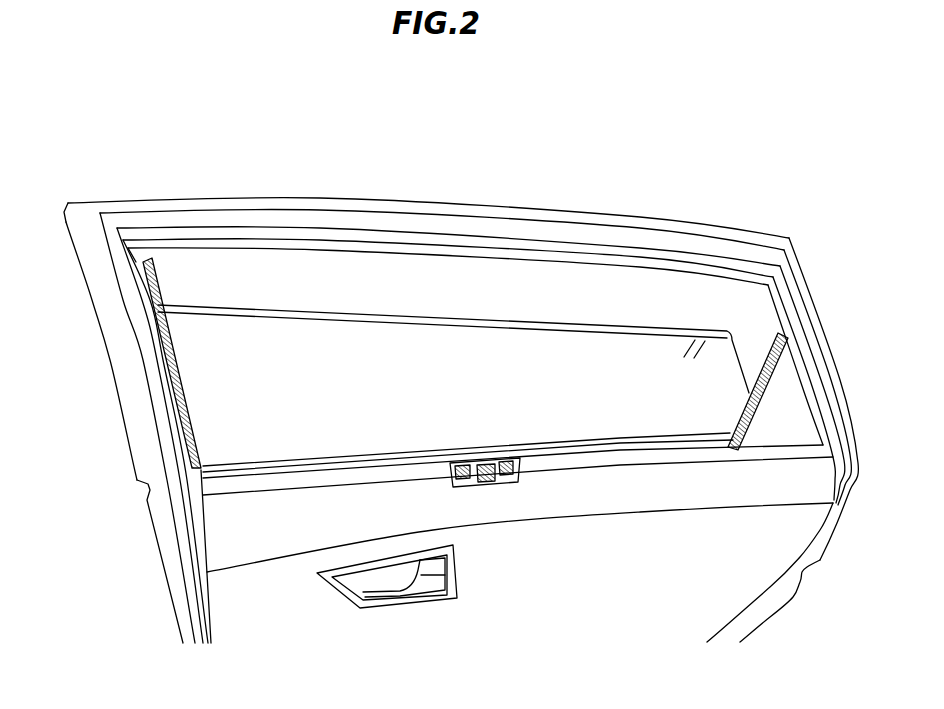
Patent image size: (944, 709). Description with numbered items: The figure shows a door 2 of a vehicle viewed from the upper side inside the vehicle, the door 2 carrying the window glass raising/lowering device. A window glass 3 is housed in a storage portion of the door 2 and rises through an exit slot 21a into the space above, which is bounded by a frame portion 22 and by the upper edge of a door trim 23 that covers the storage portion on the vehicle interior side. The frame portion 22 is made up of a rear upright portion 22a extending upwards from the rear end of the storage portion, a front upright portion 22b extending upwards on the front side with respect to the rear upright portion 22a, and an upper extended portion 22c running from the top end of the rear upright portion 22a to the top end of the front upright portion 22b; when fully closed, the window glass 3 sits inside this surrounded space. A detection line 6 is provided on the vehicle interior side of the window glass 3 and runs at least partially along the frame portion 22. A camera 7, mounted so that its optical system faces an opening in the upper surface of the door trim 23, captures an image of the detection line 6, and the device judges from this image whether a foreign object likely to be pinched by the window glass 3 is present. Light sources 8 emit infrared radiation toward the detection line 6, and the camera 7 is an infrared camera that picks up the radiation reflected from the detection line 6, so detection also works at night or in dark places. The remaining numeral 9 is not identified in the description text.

The door 2 is at (445, 390).
The frame portion 22 is at (465, 388).
The rear upright portion 22a is at (831, 399).
The front upright portion 22b is at (124, 428).
The upper extended portion 22c is at (428, 218).
The window glass 3 is at (453, 330).
The detection line 6 is at (465, 363).
The exit slot 21a is at (468, 439).
The door trim 23 is at (513, 412).
The camera 7 is at (484, 409).
The light source 8 is at (481, 444).
The door trim 9 is at (518, 445).